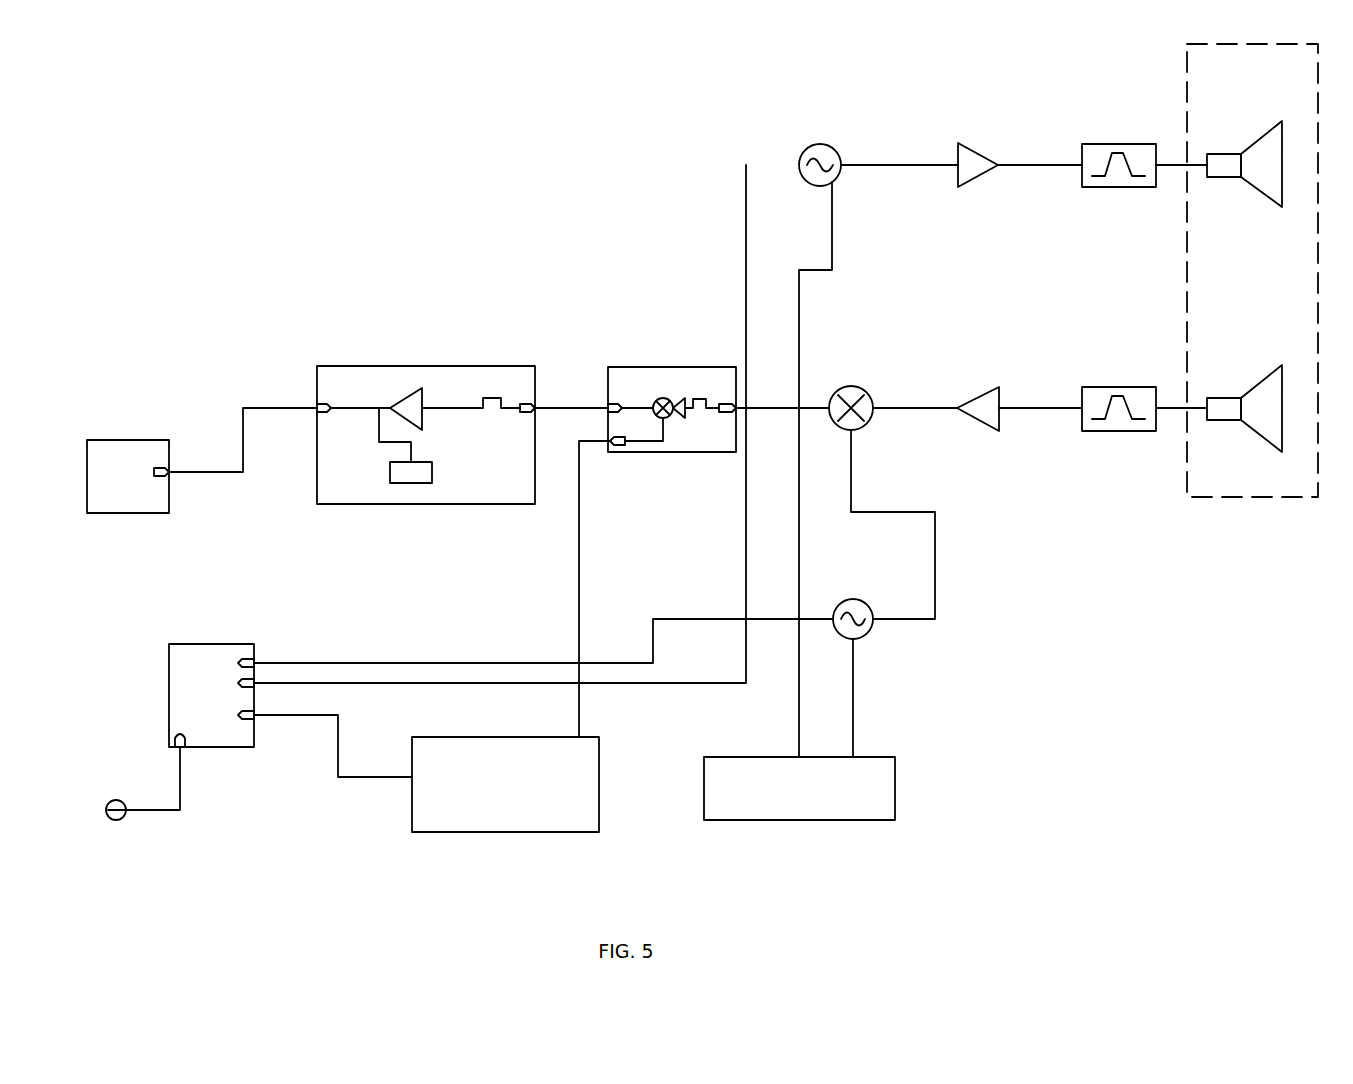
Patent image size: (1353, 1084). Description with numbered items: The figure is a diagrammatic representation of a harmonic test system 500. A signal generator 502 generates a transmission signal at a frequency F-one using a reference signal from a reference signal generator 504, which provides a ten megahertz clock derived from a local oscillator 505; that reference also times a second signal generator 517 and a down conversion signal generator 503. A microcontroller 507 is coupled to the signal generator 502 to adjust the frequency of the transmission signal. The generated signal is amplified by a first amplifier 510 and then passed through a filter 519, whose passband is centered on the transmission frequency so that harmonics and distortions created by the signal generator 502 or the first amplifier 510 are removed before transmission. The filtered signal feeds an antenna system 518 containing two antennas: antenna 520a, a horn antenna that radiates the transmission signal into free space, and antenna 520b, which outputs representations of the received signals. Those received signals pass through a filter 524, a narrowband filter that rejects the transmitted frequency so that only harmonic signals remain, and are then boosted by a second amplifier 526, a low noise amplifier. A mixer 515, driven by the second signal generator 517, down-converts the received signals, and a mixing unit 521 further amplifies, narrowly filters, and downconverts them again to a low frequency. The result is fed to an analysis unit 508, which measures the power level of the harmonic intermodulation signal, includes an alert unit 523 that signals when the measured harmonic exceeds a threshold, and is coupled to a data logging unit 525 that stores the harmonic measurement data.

The harmonic test system 500 is at (505, 229).
The signal generator 502 is at (818, 144).
The down conversion signal generator 503 is at (517, 832).
The reference signal generator 504 is at (208, 644).
The local oscillator 505 is at (119, 796).
The microcontroller 507 is at (833, 820).
The analysis unit 508 is at (463, 384).
The first amplifier 510 is at (1006, 133).
The mixer 515 is at (853, 386).
The second signal generator 517 is at (851, 599).
The antenna system 518 is at (1178, 258).
The filter 519 is at (1118, 144).
The antenna 520a is at (1255, 138).
The antenna 520b is at (1222, 398).
The mixing unit 521 is at (653, 367).
The alert unit 523 is at (433, 471).
The filter 524 is at (1118, 387).
The data logging unit 525 is at (128, 476).
The second amplifier 526 is at (1013, 384).